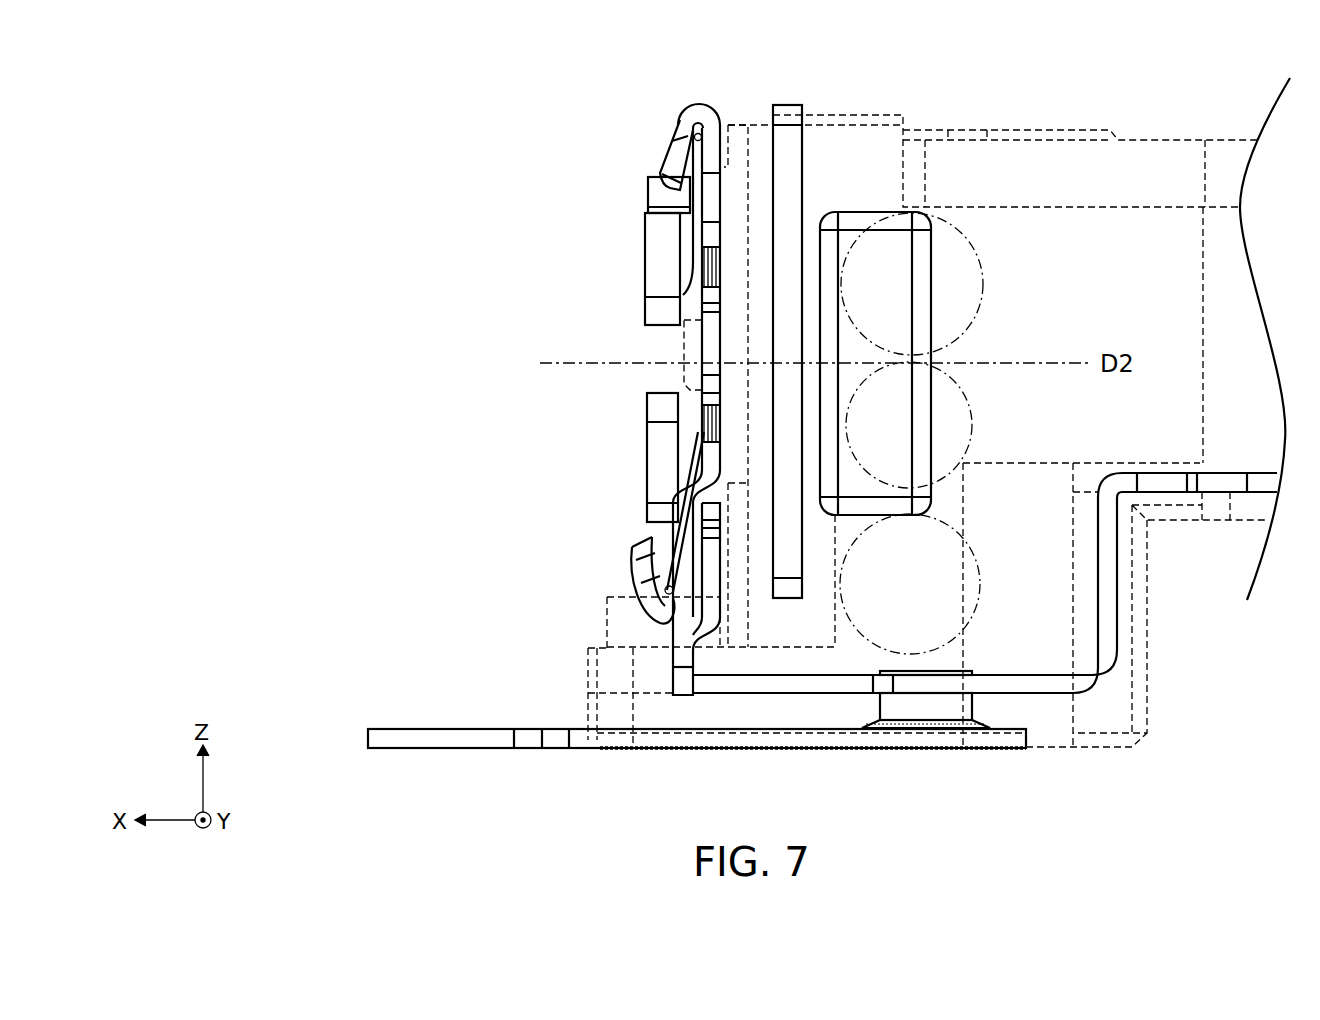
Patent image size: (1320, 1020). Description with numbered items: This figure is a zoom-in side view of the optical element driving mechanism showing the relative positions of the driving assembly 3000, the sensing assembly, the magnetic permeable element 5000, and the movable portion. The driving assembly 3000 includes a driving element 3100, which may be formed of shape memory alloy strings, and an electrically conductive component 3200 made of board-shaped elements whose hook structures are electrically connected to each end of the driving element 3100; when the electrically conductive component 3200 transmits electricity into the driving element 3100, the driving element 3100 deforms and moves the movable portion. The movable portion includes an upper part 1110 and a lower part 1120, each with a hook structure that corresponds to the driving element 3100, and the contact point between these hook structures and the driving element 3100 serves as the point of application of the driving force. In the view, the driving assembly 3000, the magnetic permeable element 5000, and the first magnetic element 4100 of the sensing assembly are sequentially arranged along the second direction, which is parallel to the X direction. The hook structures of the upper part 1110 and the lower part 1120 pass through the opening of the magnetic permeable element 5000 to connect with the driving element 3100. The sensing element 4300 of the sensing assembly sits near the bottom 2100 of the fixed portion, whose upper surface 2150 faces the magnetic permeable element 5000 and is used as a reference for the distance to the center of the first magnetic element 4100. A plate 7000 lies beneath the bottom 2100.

The upper part 1110 is at (650, 245).
The lower part 1120 is at (650, 455).
The bottom 2100 is at (600, 672).
The upper surface 2150 is at (606, 640).
The driving assembly 3000 is at (687, 118).
The driving element 3100 is at (670, 565).
The electrically conductive component 3200 is at (640, 567).
The first magnetic element 4100 is at (855, 215).
The sensing element 4300 is at (920, 712).
The magnetic permeable element 5000 is at (788, 108).
The base plate 7000 is at (457, 742).